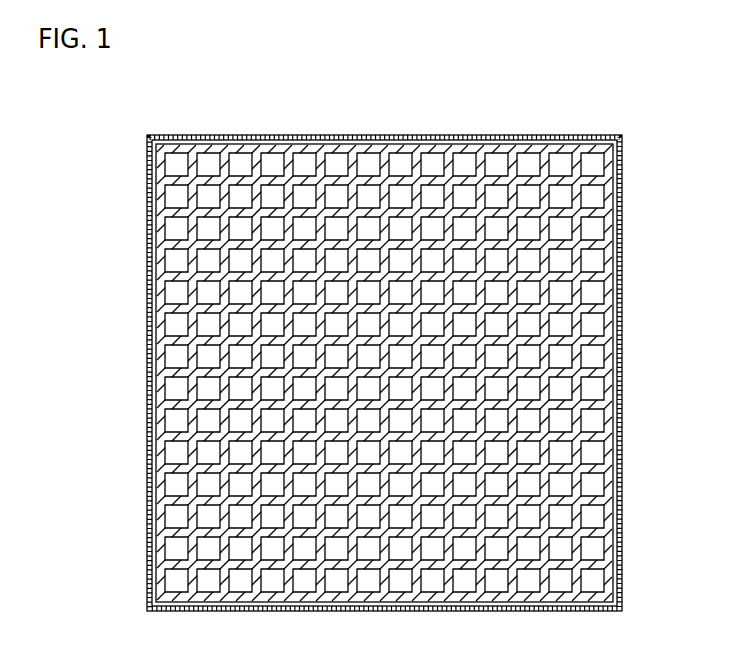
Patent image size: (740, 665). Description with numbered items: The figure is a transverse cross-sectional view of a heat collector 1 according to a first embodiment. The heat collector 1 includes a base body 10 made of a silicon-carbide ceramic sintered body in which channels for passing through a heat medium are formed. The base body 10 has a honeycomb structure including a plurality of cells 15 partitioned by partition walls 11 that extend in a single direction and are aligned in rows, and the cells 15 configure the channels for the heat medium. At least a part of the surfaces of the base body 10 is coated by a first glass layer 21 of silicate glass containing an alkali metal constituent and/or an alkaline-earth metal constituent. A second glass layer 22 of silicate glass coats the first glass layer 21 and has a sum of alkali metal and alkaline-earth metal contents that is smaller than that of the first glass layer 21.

The heat collector 1 is at (655, 110).
The base body 10 is at (434, 373).
The partition walls 11 is at (548, 323).
The cells 15 is at (558, 388).
The first glass layer 21 is at (620, 186).
The second glass layer 22 is at (622, 146).